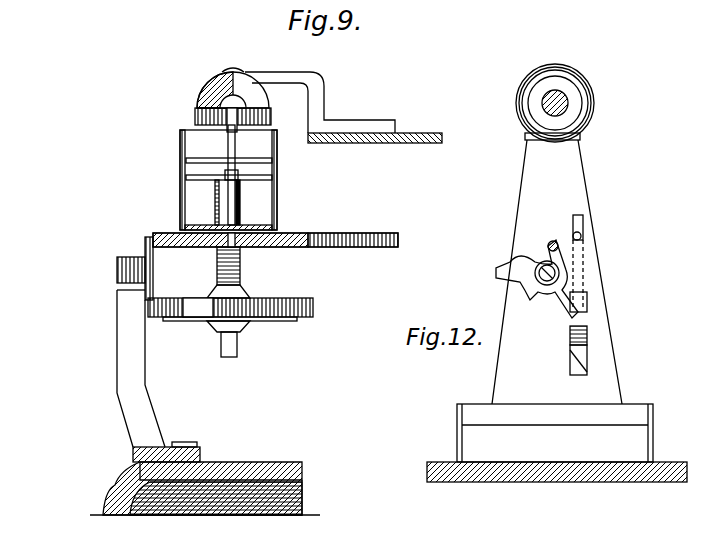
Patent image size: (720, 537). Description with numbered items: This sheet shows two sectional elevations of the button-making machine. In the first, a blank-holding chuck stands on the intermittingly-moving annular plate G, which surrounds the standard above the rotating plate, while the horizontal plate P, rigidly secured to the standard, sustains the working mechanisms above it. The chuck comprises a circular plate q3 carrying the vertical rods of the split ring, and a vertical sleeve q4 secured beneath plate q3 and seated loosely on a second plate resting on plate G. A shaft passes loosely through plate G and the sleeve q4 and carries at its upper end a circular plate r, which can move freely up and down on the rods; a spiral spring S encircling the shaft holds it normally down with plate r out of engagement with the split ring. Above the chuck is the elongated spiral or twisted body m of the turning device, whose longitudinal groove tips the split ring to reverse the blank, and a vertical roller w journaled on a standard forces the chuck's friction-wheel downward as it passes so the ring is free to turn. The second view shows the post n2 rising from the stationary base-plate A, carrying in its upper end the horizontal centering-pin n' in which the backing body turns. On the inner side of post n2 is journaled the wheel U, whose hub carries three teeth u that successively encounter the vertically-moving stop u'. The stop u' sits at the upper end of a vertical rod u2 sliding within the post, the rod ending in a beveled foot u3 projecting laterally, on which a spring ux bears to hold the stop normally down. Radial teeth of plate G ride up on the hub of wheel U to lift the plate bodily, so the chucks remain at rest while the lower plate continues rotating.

In FIG. 9, the spiral or twisted body m is at (200, 96).
In FIG. 9, the horizontal plate P is at (428, 130).
In FIG. 9, the circular plate r is at (212, 150).
In FIG. 9, the circular plate q3 is at (214, 182).
In FIG. 9, the vertical sleeve q4 is at (240, 194).
In FIG. 9, the annular plate G is at (275, 229).
In FIG. 9, the vertical roller w is at (144, 268).
In FIG. 9, the spiral spring S is at (243, 276).
In FIG. 9, the horizontal centering-pin n' is at (242, 327).
In FIG. 12, the horizontal centering-pin n' is at (559, 100).
In FIG. 9, the stationary base-plate A is at (268, 451).
In FIG. 12, the stationary base-plate A is at (552, 505).
In FIG. 12, the post n2 is at (588, 186).
In FIG. 12, the wheel U is at (538, 298).
In FIG. 12, the teeth u is at (525, 275).
In FIG. 12, the vertically-moving stop u' is at (599, 235).
In FIG. 12, the vertical rod u2 is at (584, 277).
In FIG. 12, the spring ux is at (588, 336).
In FIG. 12, the beveled foot u3 is at (587, 359).